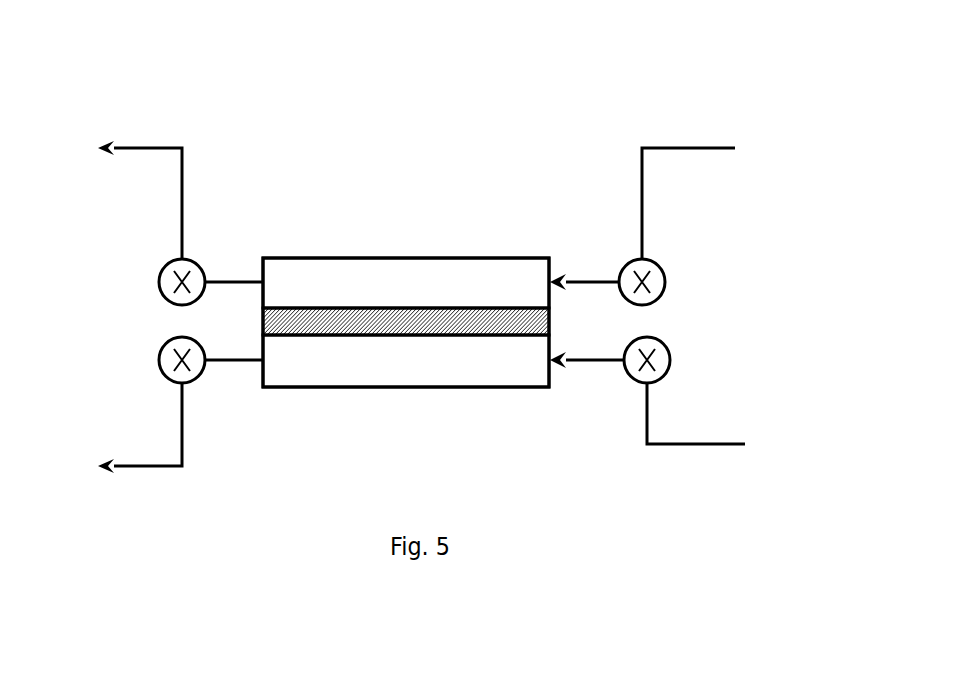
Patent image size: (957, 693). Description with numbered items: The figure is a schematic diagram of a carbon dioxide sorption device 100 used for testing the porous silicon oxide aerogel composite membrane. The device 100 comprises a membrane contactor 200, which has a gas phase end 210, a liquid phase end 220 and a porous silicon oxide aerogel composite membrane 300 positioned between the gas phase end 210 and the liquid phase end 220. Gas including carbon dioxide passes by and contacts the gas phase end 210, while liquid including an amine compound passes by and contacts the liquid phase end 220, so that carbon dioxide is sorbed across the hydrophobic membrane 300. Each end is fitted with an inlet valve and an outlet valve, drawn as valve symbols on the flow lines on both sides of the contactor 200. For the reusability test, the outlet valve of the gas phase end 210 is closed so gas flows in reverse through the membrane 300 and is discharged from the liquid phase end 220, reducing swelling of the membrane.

The carbon dioxide sorption device 100 is at (93, 75).
The membrane contactor 200 is at (399, 222).
The gas phase end 210 is at (409, 202).
The liquid phase end 220 is at (413, 404).
The porous silicon oxide aerogel composite membrane 300 is at (551, 325).